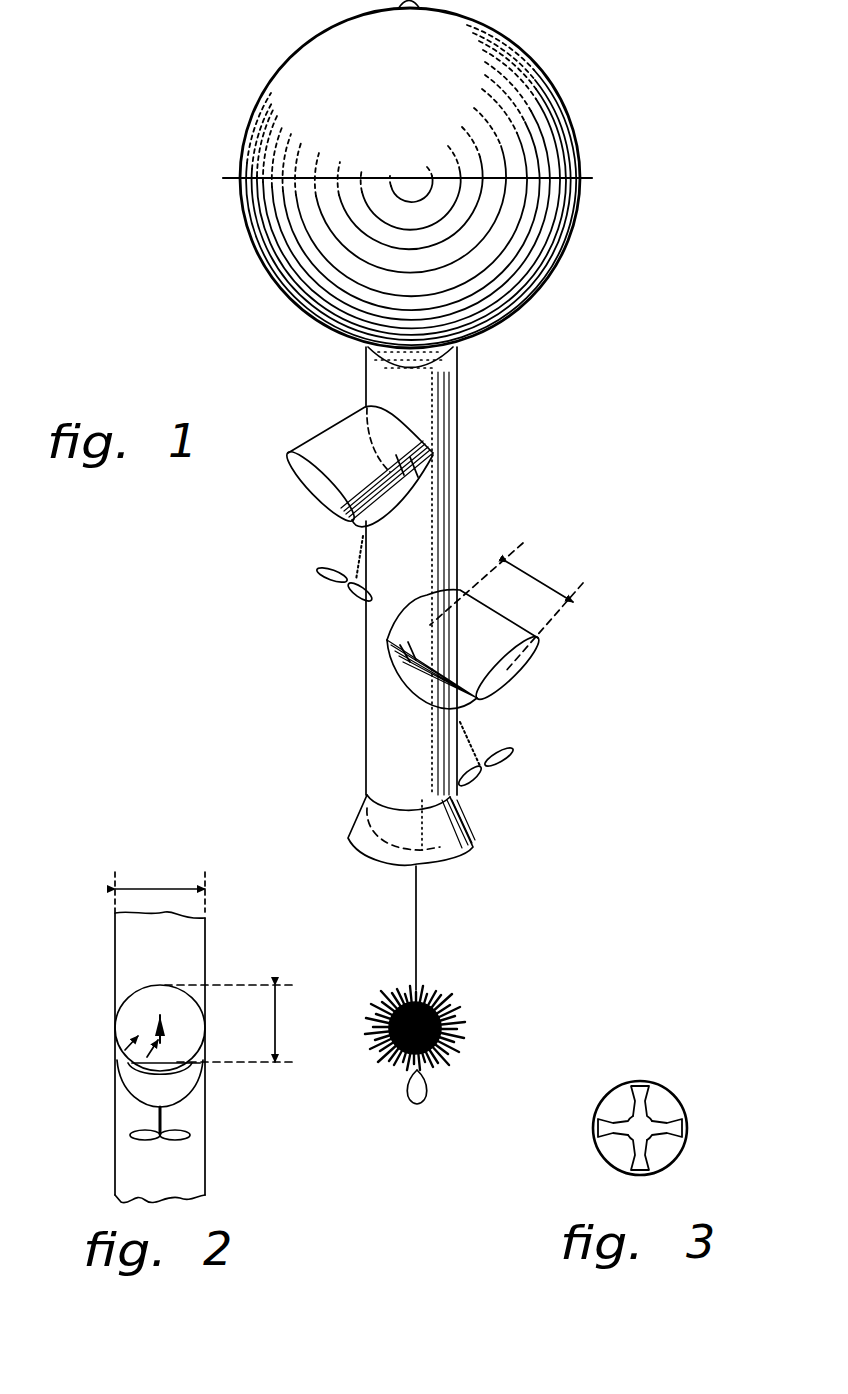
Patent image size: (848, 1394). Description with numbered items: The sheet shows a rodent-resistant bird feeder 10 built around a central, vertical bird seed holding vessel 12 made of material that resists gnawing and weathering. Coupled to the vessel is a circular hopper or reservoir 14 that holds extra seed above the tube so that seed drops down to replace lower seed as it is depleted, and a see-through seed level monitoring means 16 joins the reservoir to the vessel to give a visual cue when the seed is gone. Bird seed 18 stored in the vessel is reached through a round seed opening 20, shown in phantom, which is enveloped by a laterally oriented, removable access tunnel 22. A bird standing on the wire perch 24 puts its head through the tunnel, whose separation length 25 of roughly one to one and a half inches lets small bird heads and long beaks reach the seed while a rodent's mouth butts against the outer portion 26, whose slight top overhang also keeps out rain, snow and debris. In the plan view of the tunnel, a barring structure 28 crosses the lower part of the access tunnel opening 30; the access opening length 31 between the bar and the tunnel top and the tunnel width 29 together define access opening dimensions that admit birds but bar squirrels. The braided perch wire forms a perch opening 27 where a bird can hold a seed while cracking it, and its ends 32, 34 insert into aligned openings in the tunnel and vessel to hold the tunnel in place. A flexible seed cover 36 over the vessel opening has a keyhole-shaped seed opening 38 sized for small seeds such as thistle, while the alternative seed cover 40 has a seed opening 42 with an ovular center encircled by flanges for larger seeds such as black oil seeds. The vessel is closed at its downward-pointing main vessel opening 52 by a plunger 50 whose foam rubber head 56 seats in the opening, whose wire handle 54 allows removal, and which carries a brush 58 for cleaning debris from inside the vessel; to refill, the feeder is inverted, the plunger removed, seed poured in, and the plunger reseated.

In FIG. 1, the bird feeder 10 is at (652, 115).
In FIG. 1, the bird seed holding vessel 12 is at (366, 681).
In FIG. 2, the bird seed holding vessel 12 is at (206, 945).
In FIG. 1, the hopper (reservoir) 14 is at (303, 42).
In FIG. 1, the seed level monitoring means 16 is at (457, 350).
In FIG. 1, the bird seed 18 is at (380, 358).
In FIG. 1, the seed opening 20 is at (422, 470).
In FIG. 1, the access tunnel 22 is at (330, 438).
In FIG. 2, the access tunnel 22 is at (130, 1000).
In FIG. 1, the perch (perching means) 24 is at (320, 572).
In FIG. 2, the perch (perching means) 24 is at (180, 1139).
In FIG. 1, the separation length 25 is at (565, 578).
In FIG. 1, the outer portion 26 is at (280, 480).
In FIG. 2, the perch opening 27 is at (172, 1117).
In FIG. 2, the barring structure 28 is at (188, 1076).
In FIG. 2, the width 29 is at (155, 889).
In FIG. 2, the access tunnel opening 30 is at (125, 1050).
In FIG. 2, the access opening length 31 is at (278, 1023).
In FIG. 2, the end 32 is at (113, 1035).
In FIG. 2, the end 34 is at (207, 1030).
In FIG. 2, the seed cover 36 is at (205, 1010).
In FIG. 2, the seed opening 38 is at (135, 1073).
In FIG. 3, the seed cover 40 is at (680, 1096).
In FIG. 3, the seed opening 42 is at (626, 1136).
In FIG. 1, the plunger 50 is at (438, 936).
In FIG. 1, the main vessel opening 52 is at (477, 855).
In FIG. 1, the handle 54 is at (416, 968).
In FIG. 1, the head 56 is at (390, 850).
In FIG. 1, the brush 58 is at (460, 1042).